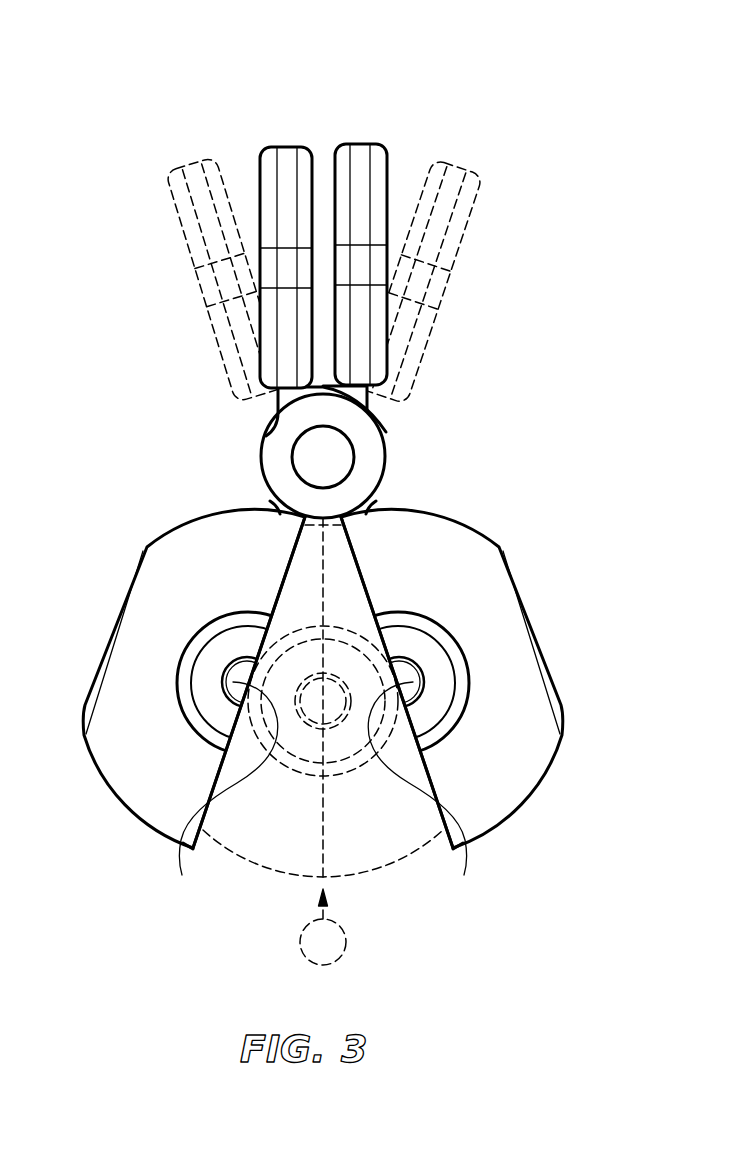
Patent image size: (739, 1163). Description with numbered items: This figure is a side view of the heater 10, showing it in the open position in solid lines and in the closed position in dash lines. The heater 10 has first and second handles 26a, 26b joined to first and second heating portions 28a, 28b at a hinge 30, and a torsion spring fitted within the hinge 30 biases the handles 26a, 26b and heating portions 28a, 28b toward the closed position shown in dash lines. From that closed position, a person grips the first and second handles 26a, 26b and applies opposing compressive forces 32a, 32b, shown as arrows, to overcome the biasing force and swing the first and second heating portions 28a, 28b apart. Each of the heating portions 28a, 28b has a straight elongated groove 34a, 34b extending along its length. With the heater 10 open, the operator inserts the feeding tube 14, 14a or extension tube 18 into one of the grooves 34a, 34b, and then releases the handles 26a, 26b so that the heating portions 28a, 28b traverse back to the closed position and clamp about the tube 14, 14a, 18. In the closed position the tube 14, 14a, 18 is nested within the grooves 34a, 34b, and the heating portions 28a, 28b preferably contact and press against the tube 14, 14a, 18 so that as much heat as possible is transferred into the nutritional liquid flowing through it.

The heater 10 is at (568, 65).
The first handle 26a is at (287, 145).
The second handle 26b is at (360, 142).
The first compressive force 32a is at (163, 208).
The second compressive force 32b is at (485, 208).
The hinge 30 is at (399, 410).
The first heating portion 28a is at (456, 567).
The second heating portion 28b is at (190, 567).
The first groove 34a is at (232, 713).
The second groove 34b is at (415, 713).
The feeding tube 14 is at (408, 951).
The feeding tube 14a is at (408, 951).
The extension tube 18 is at (347, 940).